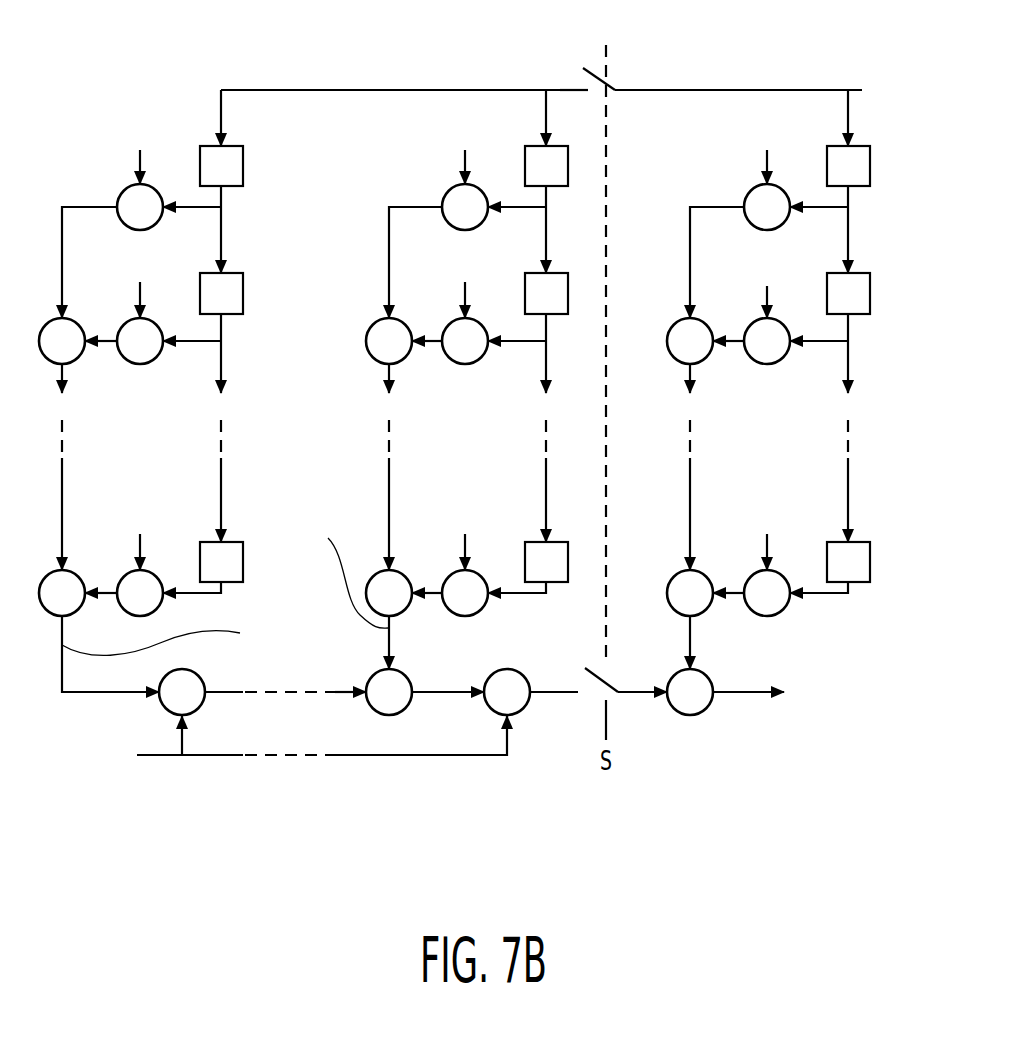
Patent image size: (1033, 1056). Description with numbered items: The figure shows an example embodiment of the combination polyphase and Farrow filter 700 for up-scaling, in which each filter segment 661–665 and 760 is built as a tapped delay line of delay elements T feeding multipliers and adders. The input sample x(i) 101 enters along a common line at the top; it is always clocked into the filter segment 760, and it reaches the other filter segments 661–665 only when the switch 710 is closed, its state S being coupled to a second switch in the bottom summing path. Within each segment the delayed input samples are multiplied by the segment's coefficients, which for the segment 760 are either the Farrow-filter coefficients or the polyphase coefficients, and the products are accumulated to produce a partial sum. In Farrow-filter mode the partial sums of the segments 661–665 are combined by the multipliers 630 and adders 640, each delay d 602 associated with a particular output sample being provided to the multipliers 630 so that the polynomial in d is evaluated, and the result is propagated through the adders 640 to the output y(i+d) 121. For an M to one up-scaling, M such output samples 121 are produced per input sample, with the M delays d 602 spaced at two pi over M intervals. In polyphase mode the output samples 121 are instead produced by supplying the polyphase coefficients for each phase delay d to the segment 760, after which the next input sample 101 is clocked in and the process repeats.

The input signal x(i) 101 is at (872, 82).
The output sample y(i+d) 121 is at (817, 675).
The delay d 602 is at (124, 776).
The multiplier 630 is at (524, 711).
The adder 640 is at (395, 716).
The filter segment 661 is at (374, 240).
The filter segment 665 is at (260, 291).
The combination polyphase and Farrow filter 700 is at (325, 408).
The switch 710 is at (614, 87).
The filter segment 760 is at (676, 240).